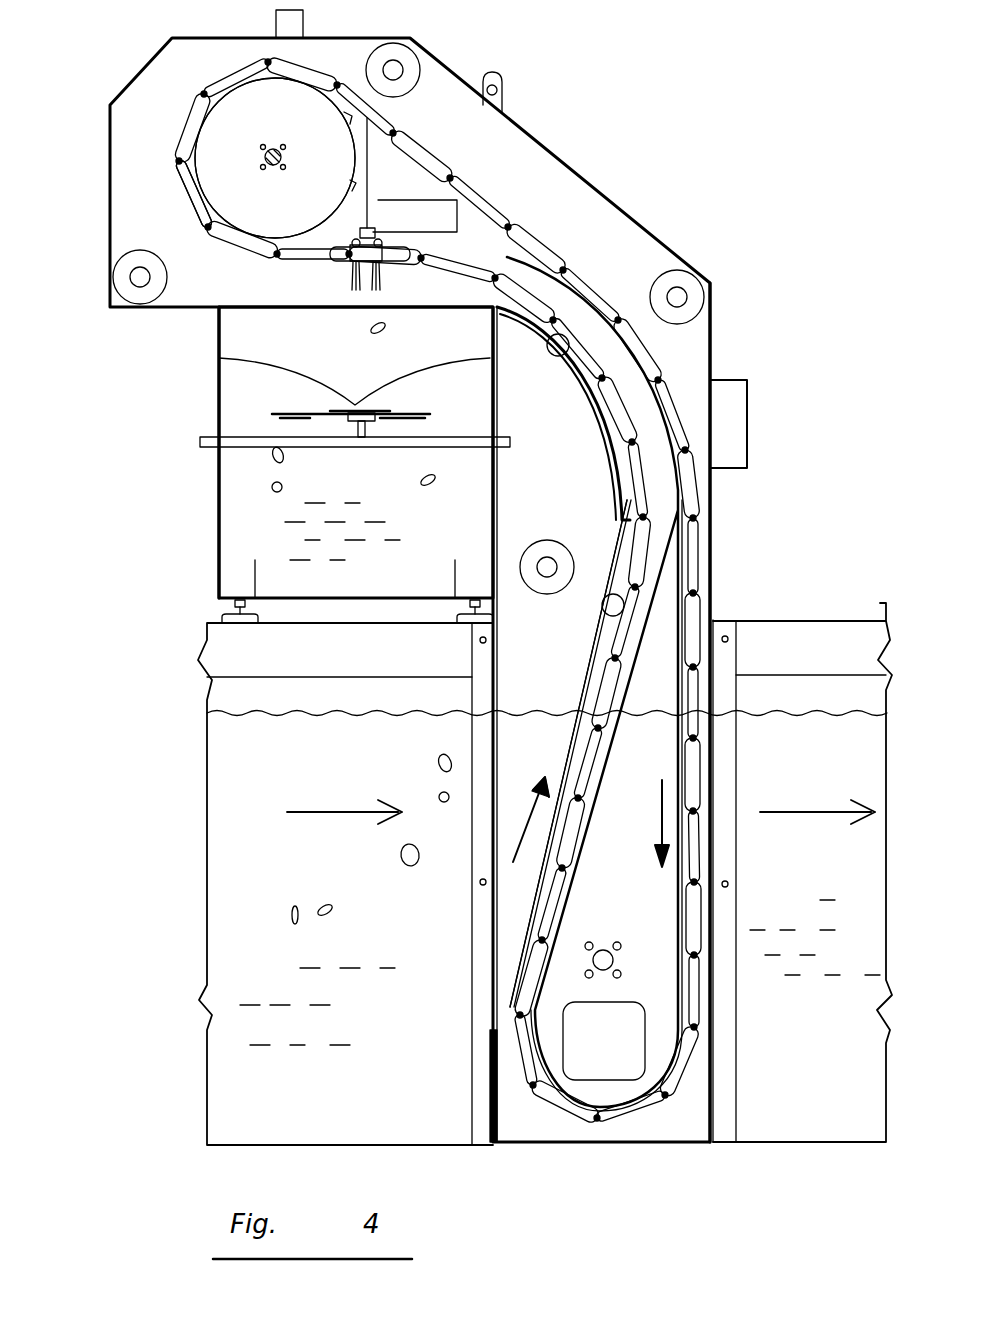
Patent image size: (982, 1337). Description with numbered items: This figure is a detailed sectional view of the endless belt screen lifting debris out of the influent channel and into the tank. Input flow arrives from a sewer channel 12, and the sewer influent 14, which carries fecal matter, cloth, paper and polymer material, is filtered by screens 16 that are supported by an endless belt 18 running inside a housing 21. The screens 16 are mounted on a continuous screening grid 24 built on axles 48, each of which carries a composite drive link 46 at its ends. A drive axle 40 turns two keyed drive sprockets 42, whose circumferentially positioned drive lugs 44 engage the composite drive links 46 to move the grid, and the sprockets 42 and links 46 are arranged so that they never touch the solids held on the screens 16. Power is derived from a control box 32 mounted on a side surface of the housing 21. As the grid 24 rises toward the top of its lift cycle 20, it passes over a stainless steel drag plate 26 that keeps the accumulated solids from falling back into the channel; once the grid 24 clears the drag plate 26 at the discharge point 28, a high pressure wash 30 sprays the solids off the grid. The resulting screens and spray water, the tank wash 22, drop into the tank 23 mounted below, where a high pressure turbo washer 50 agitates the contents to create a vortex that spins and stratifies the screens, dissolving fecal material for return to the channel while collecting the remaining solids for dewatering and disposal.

The sewer channel 12 is at (318, 693).
The sewer influent 14 is at (337, 761).
The screens 16 is at (618, 633).
The endless belt 18 is at (510, 202).
The top of lift cycle 20 is at (388, 273).
The housing 21 is at (714, 345).
The tank wash 22 is at (240, 397).
The tank 23 is at (219, 523).
The screening grid 24 is at (528, 934).
The drag plate 26 is at (558, 356).
The discharge point 28 is at (350, 272).
The high pressure wash 30 is at (372, 230).
The control box 32 is at (749, 420).
The drive axle 40 is at (280, 146).
The drive sprockets 42 is at (208, 153).
The drive lugs 44 is at (327, 221).
The composite drive links 46 is at (173, 178).
The axles 48 is at (210, 227).
The high pressure turbo washer 50 is at (377, 424).